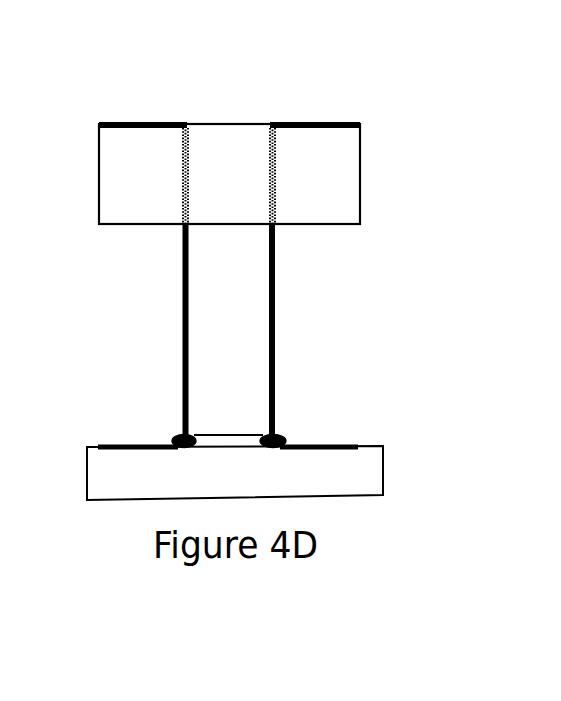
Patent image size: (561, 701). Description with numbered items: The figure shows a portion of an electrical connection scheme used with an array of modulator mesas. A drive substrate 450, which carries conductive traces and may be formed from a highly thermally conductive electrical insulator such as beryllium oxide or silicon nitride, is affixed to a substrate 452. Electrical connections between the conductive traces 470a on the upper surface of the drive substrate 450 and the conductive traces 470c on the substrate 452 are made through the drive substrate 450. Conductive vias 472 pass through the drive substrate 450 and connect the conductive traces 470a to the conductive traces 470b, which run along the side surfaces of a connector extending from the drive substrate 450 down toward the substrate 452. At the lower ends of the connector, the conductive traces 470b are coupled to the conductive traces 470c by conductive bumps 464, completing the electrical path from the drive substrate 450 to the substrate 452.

The drive substrate 450 is at (360, 210).
The conductive traces 470a is at (157, 123).
The conductive vias 472 is at (187, 213).
The conductive traces 470b is at (273, 358).
The conductive bumps 464 is at (177, 438).
The conductive traces 470c is at (313, 442).
The substrate 452 is at (383, 468).